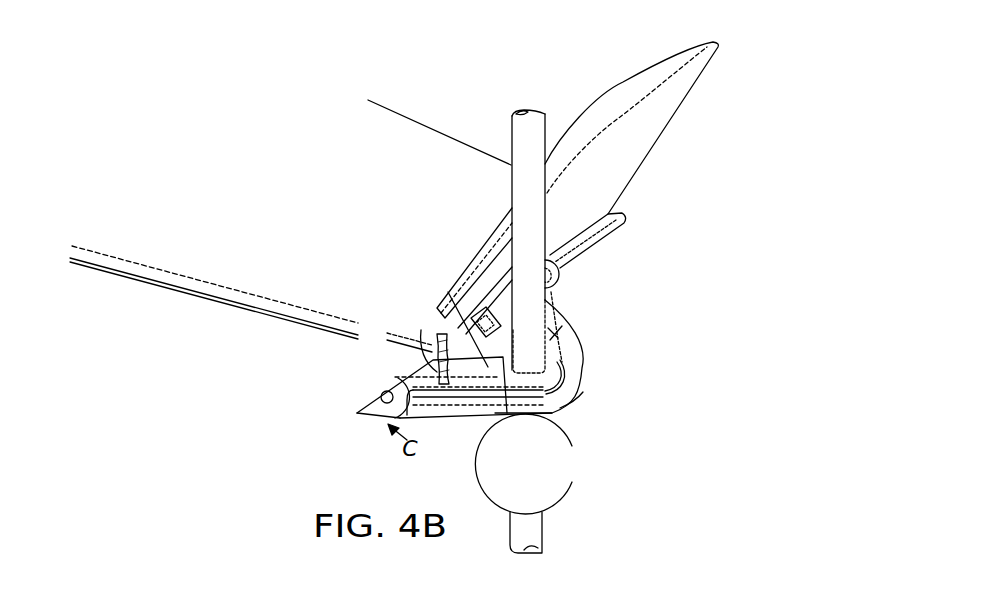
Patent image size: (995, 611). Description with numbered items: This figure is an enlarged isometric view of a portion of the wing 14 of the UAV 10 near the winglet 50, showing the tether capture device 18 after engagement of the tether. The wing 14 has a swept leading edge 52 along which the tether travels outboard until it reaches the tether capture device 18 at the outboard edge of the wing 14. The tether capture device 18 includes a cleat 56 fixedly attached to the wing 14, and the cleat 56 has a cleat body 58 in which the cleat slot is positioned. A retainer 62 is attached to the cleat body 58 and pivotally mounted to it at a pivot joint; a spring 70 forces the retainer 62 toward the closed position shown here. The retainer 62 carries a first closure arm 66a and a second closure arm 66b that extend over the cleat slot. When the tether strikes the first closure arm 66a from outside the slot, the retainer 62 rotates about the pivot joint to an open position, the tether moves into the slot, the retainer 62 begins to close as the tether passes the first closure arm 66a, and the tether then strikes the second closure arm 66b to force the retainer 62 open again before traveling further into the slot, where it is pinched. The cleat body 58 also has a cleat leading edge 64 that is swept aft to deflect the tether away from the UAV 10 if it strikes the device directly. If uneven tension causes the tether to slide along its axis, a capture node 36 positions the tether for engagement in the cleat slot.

The UAV 10 is at (716, 148).
The wing 14 is at (467, 152).
The tether capture device 18 is at (602, 358).
The capture node 36 is at (538, 472).
The winglet 50 is at (624, 92).
The leading edge 52 is at (92, 267).
The cleat 56 is at (583, 386).
The cleat body 58 is at (556, 332).
The retainer 62 is at (418, 347).
The cleat leading edge 64 is at (458, 402).
The first closure arm 66a is at (403, 362).
The second closure arm 66b is at (429, 290).
The spring 70 is at (572, 412).